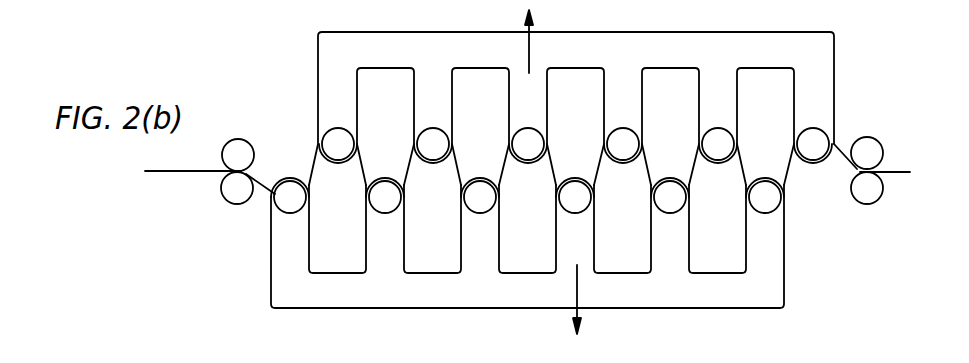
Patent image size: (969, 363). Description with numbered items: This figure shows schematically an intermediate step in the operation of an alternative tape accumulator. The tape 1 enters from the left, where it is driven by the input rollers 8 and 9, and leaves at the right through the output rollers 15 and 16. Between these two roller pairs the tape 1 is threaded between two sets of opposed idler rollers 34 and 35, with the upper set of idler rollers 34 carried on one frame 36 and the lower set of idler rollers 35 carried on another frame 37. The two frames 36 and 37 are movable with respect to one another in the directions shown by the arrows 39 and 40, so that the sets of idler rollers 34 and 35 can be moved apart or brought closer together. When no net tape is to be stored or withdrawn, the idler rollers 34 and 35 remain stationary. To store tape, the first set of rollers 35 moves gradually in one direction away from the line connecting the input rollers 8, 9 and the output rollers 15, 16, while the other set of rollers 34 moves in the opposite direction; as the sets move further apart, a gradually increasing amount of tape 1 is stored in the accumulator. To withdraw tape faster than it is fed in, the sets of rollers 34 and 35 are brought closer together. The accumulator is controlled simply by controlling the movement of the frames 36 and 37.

The tape 1 is at (173, 170).
The input roller 8 is at (242, 147).
The input roller 9 is at (233, 193).
The output roller 15 is at (868, 148).
The output roller 16 is at (867, 193).
The idler rollers 34 is at (343, 137).
The idler rollers 35 is at (489, 203).
The frame 36 is at (813, 50).
The frame 37 is at (773, 293).
The arrow 39 is at (532, 50).
The arrow 40 is at (578, 293).